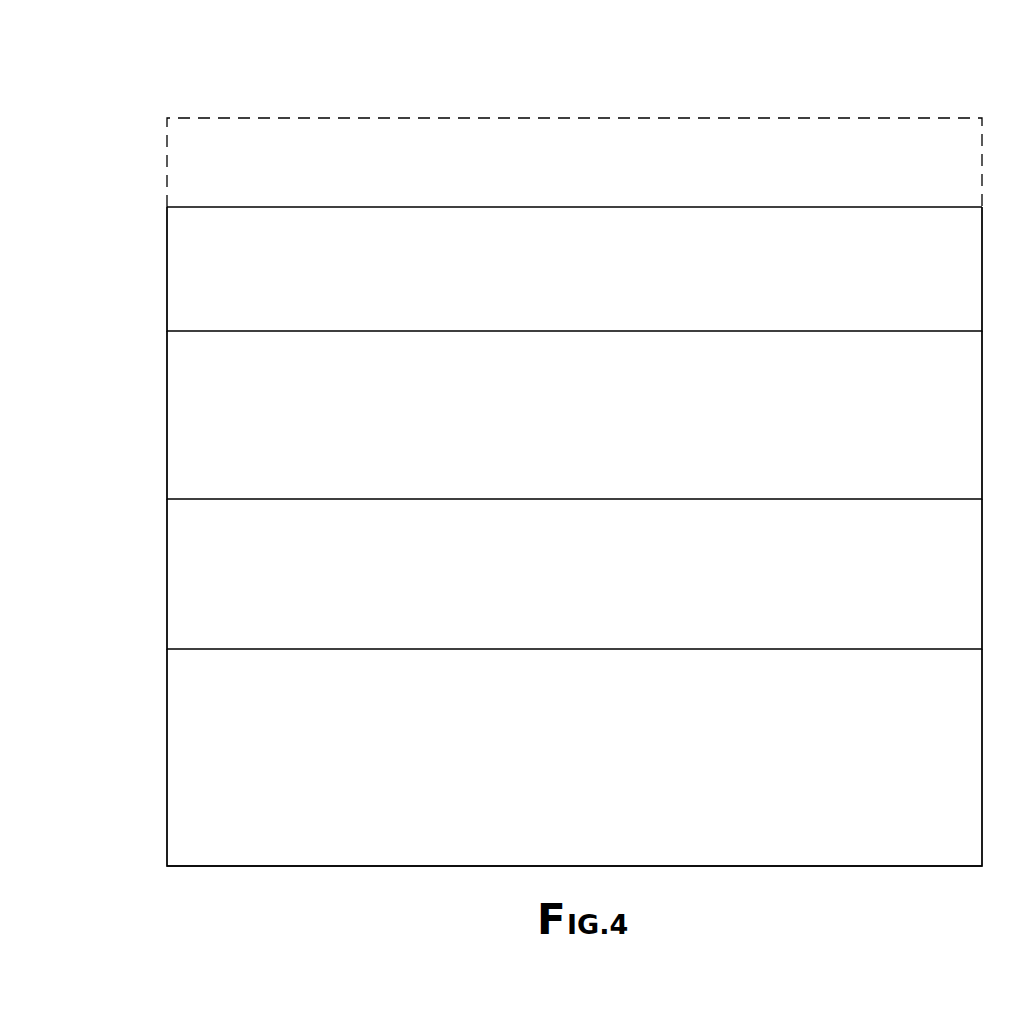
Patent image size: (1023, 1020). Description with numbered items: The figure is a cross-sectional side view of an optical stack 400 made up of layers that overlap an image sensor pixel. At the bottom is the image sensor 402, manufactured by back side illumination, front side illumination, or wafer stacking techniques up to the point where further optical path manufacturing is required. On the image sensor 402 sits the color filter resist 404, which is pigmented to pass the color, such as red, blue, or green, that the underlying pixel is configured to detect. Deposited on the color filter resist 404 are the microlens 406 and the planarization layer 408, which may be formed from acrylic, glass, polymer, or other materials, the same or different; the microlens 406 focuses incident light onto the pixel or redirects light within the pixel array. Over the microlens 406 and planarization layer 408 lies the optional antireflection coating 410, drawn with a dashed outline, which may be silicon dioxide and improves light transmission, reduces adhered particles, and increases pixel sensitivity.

The optical stack 400 is at (247, 88).
The image sensor 402 is at (185, 770).
The color filter resist 404 is at (185, 580).
The microlens 406 is at (185, 433).
The planarization layer 408 is at (185, 284).
The antireflection coating 410 is at (185, 166).